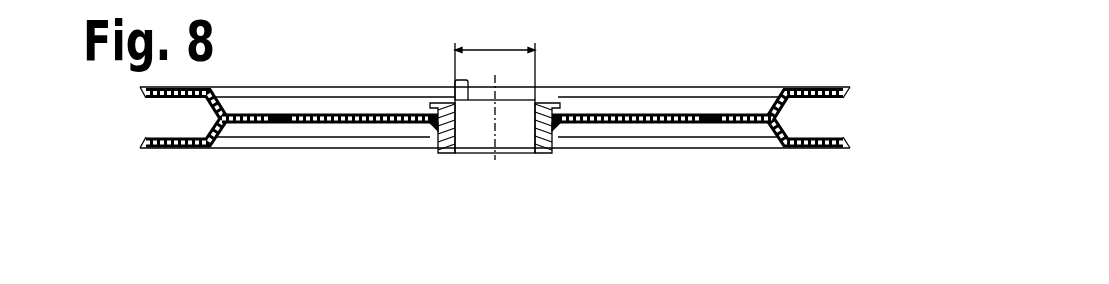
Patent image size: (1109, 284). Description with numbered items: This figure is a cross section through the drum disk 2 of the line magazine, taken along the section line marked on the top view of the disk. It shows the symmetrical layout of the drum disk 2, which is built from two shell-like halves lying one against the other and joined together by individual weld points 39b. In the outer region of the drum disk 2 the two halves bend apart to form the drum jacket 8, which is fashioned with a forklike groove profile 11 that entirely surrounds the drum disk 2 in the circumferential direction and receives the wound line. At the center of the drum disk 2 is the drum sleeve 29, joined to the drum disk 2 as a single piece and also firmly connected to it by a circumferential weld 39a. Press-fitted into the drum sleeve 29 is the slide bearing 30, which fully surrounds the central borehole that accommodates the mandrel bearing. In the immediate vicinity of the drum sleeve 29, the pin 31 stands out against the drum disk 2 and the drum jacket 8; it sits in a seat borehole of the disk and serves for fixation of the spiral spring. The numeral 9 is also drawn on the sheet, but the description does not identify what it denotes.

The drum disk 2 is at (290, 123).
The drum jacket 8 is at (833, 88).
The outer plate 9 is at (495, 75).
The forklike groove profile 11 is at (212, 102).
The drum sleeve 29 is at (436, 153).
The slide bearing 30 is at (478, 143).
The pin 31 is at (456, 82).
The circumferential weld 39a is at (566, 124).
The weld points 39b is at (712, 123).